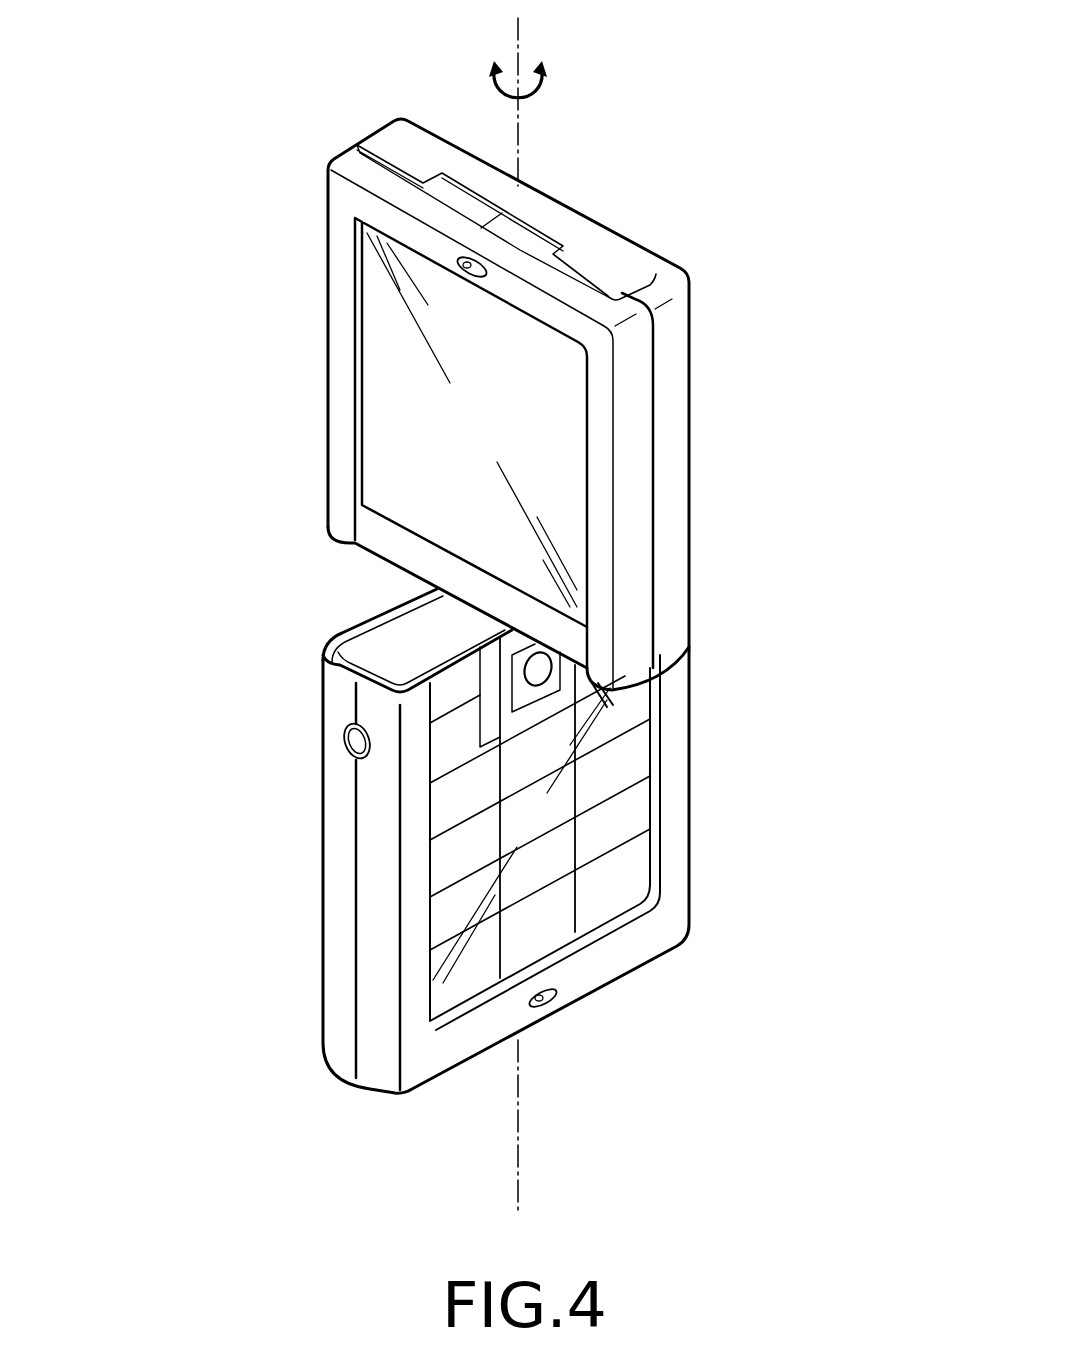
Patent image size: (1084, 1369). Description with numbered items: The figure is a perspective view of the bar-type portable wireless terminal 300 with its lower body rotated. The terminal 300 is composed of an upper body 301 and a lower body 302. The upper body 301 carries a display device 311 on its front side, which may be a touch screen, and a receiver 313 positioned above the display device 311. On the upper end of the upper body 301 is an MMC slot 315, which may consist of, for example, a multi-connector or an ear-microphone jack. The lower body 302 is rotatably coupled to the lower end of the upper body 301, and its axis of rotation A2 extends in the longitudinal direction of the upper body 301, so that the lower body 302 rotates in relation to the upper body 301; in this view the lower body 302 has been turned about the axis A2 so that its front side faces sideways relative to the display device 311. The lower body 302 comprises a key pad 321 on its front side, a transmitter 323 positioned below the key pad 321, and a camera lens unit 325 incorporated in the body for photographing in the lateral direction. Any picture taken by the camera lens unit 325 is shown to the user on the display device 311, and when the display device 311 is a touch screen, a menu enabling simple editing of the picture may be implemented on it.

The bar-type portable wireless terminal 300 is at (257, 50).
The axis of rotation A2 is at (520, 43).
The upper body 301 is at (523, 410).
The lower body 302 is at (495, 870).
The display device 311 is at (400, 383).
The receiver 313 is at (462, 267).
The MMC slot 315 is at (607, 258).
The key pad 321 is at (633, 860).
The transmitter 323 is at (543, 1000).
The camera lens unit 325 is at (353, 744).